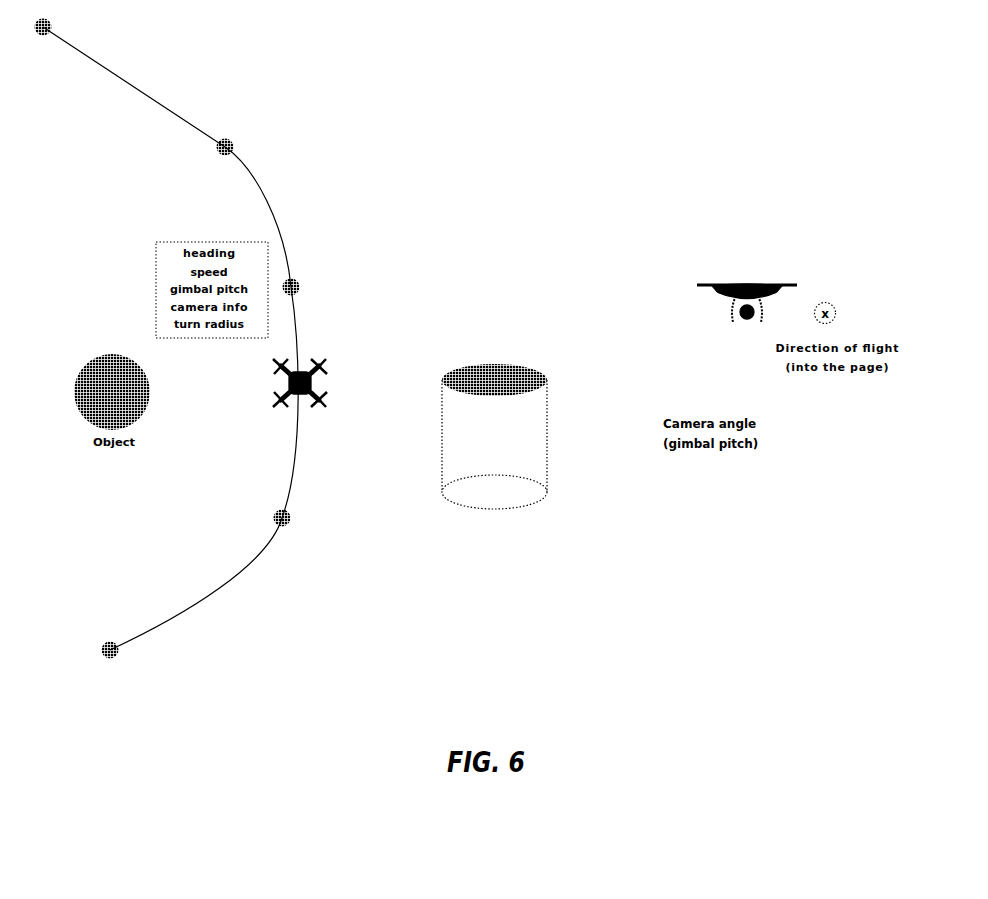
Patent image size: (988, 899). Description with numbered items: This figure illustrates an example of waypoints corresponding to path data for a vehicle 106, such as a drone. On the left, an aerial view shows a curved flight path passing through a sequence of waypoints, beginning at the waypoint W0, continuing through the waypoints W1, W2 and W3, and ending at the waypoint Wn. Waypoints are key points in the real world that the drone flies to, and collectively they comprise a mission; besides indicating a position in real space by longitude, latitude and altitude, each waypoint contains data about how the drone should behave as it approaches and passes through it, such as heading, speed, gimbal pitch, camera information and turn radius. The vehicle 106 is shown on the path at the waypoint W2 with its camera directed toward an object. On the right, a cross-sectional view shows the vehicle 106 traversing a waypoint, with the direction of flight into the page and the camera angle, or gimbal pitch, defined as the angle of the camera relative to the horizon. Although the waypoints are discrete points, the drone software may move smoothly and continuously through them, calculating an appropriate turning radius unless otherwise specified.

The vehicle 106 is at (313, 361).
The waypoint n Wn is at (58, 27).
The waypoint 3 W3 is at (246, 147).
The waypoint 2 W2 is at (309, 287).
The waypoint 1 W1 is at (302, 521).
The waypoint 0 W0 is at (122, 654).